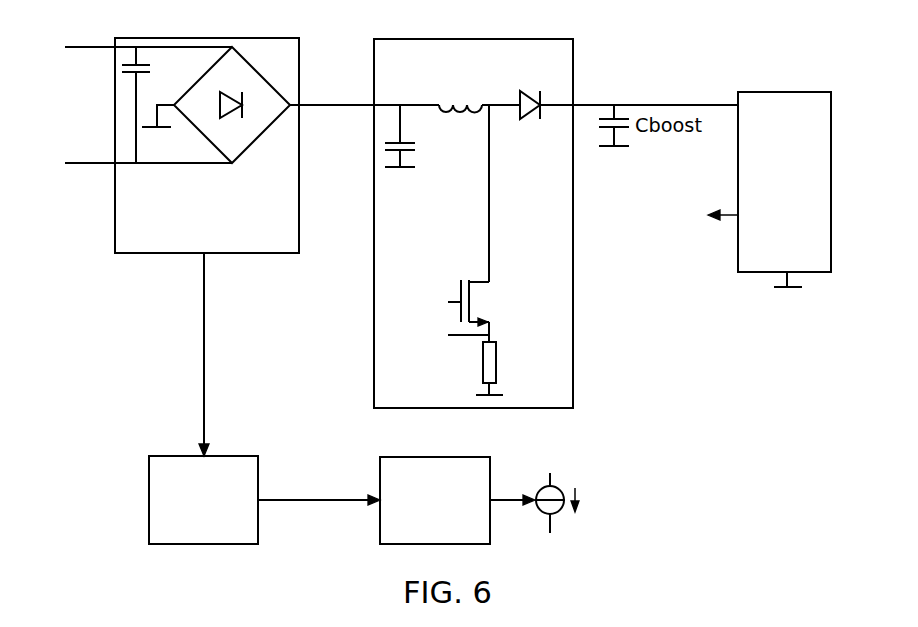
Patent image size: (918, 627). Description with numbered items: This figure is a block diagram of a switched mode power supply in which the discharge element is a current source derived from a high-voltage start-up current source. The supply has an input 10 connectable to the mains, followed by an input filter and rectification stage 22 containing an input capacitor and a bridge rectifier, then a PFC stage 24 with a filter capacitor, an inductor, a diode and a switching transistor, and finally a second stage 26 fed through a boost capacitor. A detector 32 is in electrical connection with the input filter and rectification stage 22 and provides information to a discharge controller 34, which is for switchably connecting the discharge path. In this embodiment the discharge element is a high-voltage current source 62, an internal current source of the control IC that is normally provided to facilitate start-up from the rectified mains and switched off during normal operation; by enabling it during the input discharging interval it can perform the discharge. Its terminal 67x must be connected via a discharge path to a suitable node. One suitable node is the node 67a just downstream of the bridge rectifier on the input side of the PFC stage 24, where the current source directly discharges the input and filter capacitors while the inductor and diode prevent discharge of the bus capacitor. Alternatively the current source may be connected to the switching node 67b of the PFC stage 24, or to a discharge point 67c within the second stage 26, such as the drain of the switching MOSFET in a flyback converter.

The input 10 is at (96, 116).
The input filter and rectification stage 22 is at (154, 241).
The PFC stage 24 is at (432, 392).
The second stage 26 is at (803, 192).
The detector 32 is at (220, 512).
The discharge controller 34 is at (454, 512).
The high-voltage current source 62 is at (560, 511).
The node 67a is at (337, 88).
The switching node 67b is at (489, 227).
The discharge point 67c is at (697, 214).
The terminal 67x is at (553, 478).